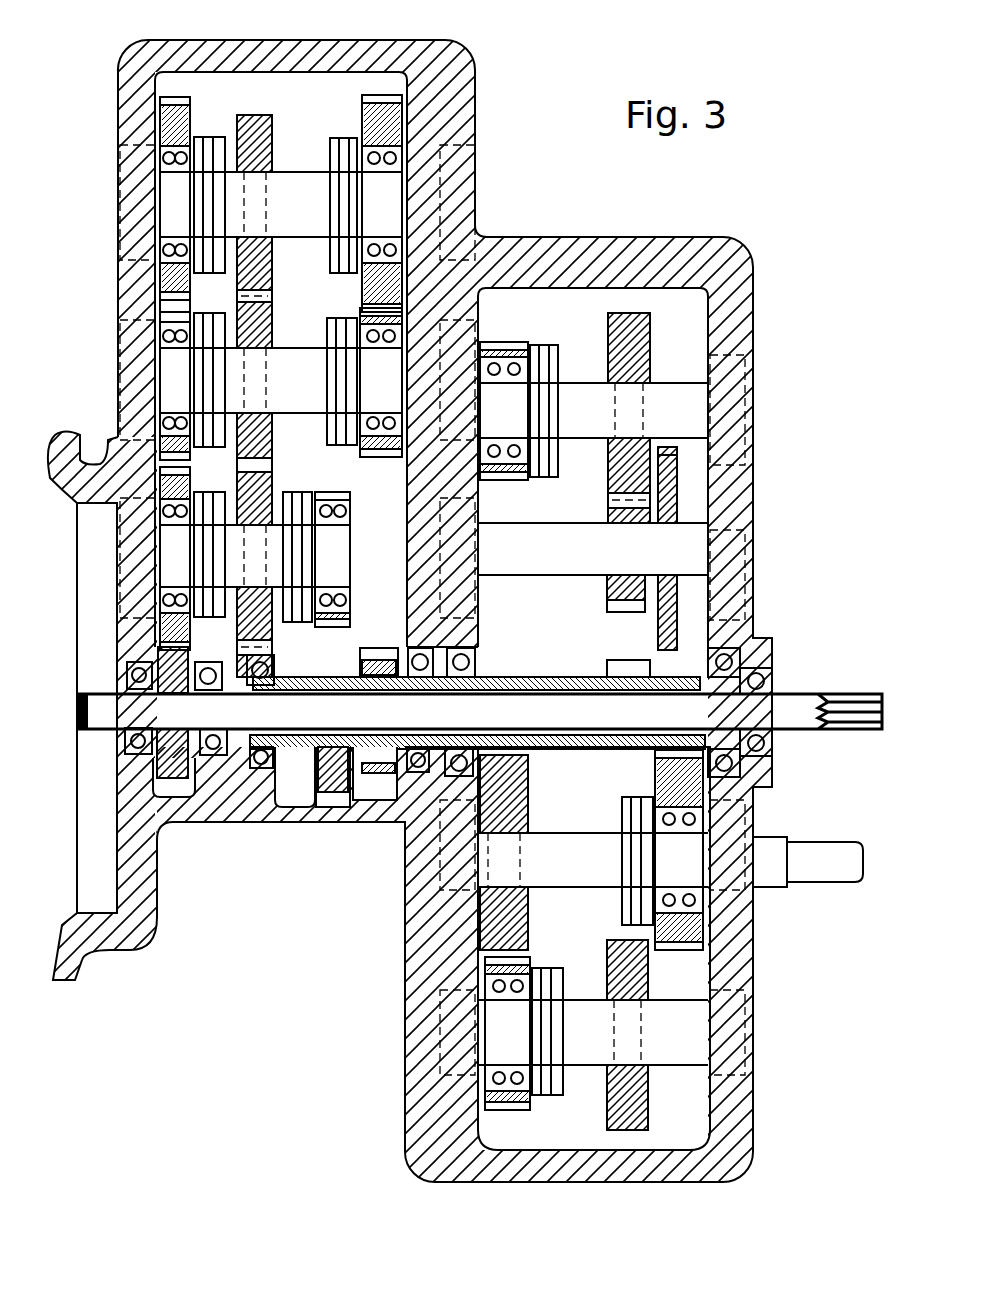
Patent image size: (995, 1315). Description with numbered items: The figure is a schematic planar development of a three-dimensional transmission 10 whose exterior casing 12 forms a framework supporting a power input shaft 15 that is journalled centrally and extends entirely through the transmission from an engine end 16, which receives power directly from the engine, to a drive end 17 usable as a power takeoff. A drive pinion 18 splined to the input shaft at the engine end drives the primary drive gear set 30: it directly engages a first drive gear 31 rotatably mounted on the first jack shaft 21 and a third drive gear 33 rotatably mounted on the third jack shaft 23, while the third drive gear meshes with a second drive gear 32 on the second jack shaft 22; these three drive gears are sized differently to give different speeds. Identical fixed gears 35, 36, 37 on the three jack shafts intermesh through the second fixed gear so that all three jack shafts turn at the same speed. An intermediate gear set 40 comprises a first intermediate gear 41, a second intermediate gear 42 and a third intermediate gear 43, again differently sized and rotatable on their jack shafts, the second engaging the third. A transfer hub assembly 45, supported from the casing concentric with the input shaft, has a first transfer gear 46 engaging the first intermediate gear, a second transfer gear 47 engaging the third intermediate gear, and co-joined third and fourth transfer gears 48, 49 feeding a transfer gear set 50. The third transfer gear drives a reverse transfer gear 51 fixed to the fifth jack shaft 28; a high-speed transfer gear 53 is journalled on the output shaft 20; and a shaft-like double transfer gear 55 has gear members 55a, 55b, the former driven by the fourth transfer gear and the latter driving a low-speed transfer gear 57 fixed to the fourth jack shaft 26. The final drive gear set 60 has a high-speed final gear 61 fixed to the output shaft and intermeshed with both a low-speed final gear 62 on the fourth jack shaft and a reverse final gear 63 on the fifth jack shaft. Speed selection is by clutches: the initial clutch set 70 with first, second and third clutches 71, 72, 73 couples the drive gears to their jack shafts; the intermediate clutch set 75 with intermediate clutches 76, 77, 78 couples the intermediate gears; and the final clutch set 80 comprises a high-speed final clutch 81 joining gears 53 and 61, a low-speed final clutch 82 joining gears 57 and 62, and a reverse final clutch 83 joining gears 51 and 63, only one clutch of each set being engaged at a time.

The transmission 10 is at (505, 160).
The exterior casing 12 is at (682, 238).
The power input shaft 15 is at (78, 700).
The engine end 16 is at (95, 693).
The drive end 17 is at (790, 694).
The drive pinion 18 is at (170, 770).
The output shaft 20 is at (815, 842).
The first jack shaft 21 is at (175, 570).
The second jack shaft 22 is at (175, 395).
The third jack shaft 23 is at (175, 222).
The fourth jack shaft 26 is at (715, 415).
The fifth jack shaft 28 is at (715, 1030).
The primary drive gear set 30 is at (188, 90).
The first drive gear 31 is at (165, 470).
The second drive gear 32 is at (160, 310).
The third drive gear 33 is at (175, 97).
The first fixed gear 35 is at (272, 648).
The second fixed gear 36 is at (265, 300).
The third fixed gear 37 is at (258, 115).
The intermediate gear set 40 is at (378, 90).
The first intermediate gear 41 is at (340, 492).
The second intermediate gear 42 is at (348, 452).
The third intermediate gear 43 is at (385, 100).
The transfer hub assembly 45 is at (292, 807).
The first transfer gear 46 is at (335, 807).
The second transfer gear 47 is at (382, 800).
The third transfer gear 48 is at (625, 665).
The fourth transfer gear 49 is at (700, 655).
The transfer gear set 50 is at (720, 318).
The reverse transfer gear 51 is at (612, 1118).
The high-speed transfer gear 53 is at (695, 950).
The double transfer gear 55 is at (695, 545).
The gear member 55a is at (670, 455).
The gear member 55b is at (615, 592).
The low-speed transfer gear 57 is at (640, 345).
The final drive gear set 60 is at (538, 335).
The high-speed final gear 61 is at (528, 920).
The low-speed final gear 62 is at (520, 345).
The reverse final gear 63 is at (508, 1110).
The initial clutch set 70 is at (218, 118).
The first clutch 71 is at (205, 555).
The second clutch 72 is at (205, 380).
The third clutch 73 is at (205, 183).
The intermediate clutch set 75 is at (341, 132).
The first intermediate clutch 76 is at (310, 560).
The second intermediate clutch 77 is at (340, 318).
The third intermediate clutch 78 is at (335, 165).
The final clutch set 80 is at (558, 335).
The high-speed final clutch 81 is at (625, 810).
The low-speed final clutch 82 is at (545, 477).
The reverse final clutch 83 is at (548, 968).